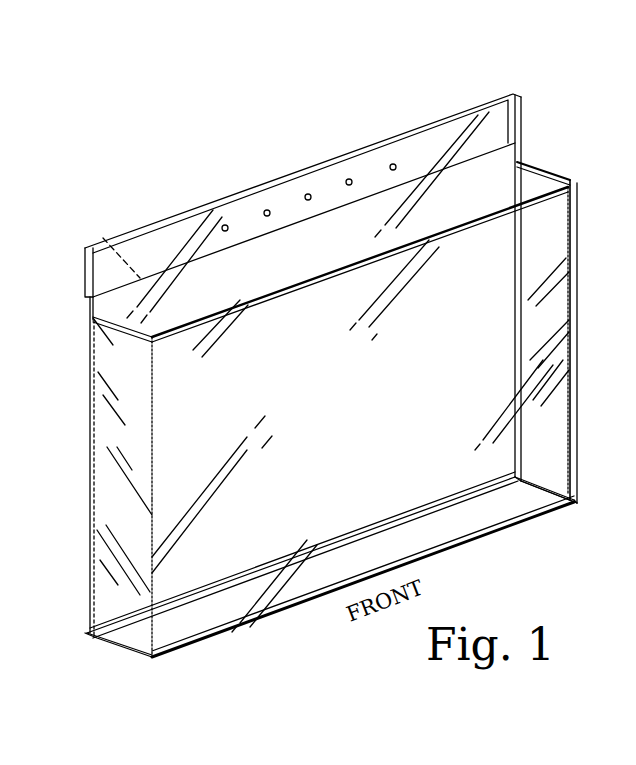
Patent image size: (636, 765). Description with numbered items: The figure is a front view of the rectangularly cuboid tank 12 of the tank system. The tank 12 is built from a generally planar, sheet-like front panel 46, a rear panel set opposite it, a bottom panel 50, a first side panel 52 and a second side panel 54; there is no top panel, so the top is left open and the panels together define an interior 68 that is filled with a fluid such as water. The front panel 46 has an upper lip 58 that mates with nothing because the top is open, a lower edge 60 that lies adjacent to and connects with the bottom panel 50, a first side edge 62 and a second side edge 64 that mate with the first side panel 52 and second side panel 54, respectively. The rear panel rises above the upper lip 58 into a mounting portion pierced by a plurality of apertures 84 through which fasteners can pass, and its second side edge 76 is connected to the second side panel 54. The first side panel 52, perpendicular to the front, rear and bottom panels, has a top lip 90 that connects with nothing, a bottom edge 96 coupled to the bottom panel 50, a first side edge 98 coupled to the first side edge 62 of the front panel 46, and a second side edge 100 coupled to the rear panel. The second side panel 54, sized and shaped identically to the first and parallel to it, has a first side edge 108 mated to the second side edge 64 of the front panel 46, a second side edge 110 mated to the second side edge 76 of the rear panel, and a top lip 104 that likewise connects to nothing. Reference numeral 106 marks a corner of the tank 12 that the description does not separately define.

The tank 12 is at (290, 131).
The front panel 46 is at (166, 454).
The bottom panel 50 is at (183, 623).
The first side panel 52 is at (106, 598).
The second side panel 54 is at (635, 141).
The upper lip 58 is at (187, 221).
The lower edge 60 is at (342, 574).
The first side edge 62 is at (152, 557).
The second side edge 64 is at (579, 475).
The interior 68 is at (297, 282).
The second side edge 76 is at (582, 278).
The apertures 84 is at (390, 163).
The top lip 90 is at (113, 340).
The bottom edge 96 is at (115, 637).
The first side edge 98 is at (152, 440).
The second side edge 100 is at (90, 413).
The top lip 104 is at (546, 168).
The bottom right corner 106 is at (533, 480).
The first side edge 108 is at (579, 380).
The second side edge 110 is at (521, 268).